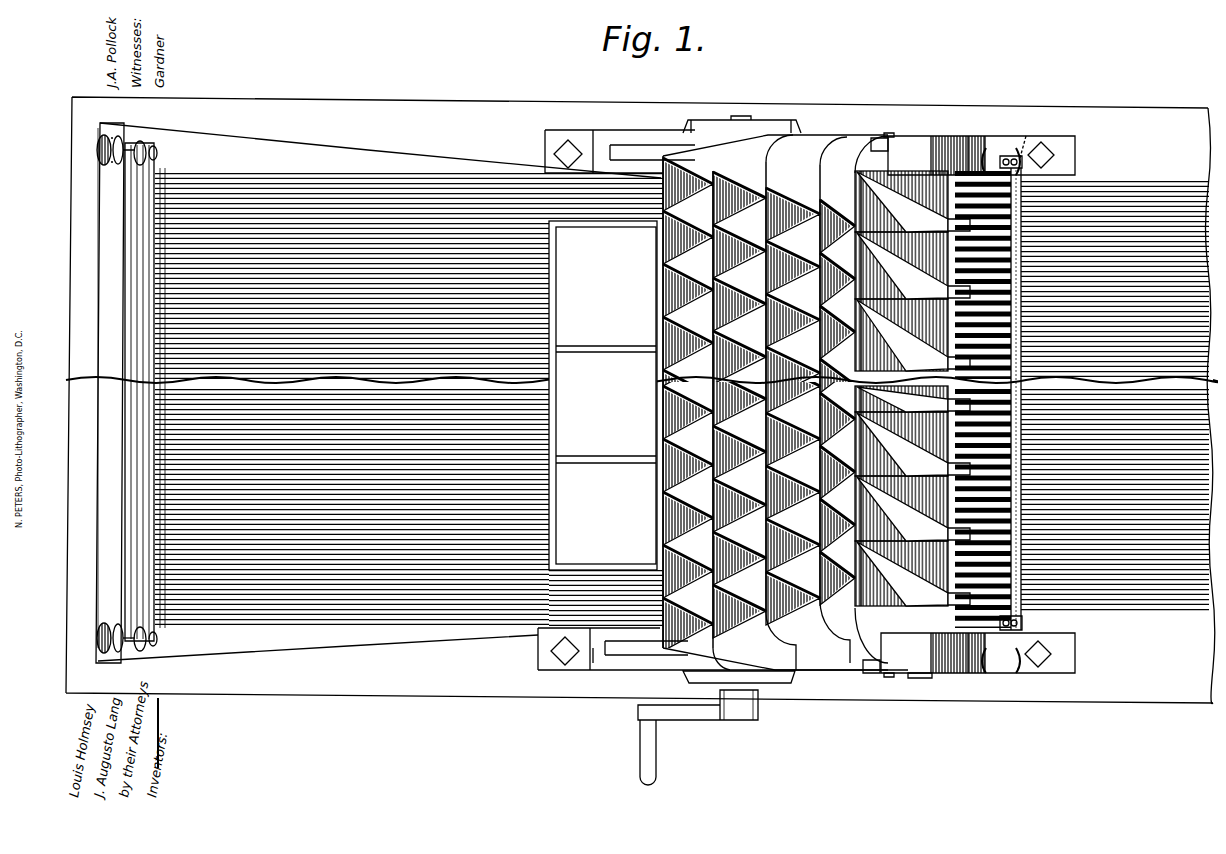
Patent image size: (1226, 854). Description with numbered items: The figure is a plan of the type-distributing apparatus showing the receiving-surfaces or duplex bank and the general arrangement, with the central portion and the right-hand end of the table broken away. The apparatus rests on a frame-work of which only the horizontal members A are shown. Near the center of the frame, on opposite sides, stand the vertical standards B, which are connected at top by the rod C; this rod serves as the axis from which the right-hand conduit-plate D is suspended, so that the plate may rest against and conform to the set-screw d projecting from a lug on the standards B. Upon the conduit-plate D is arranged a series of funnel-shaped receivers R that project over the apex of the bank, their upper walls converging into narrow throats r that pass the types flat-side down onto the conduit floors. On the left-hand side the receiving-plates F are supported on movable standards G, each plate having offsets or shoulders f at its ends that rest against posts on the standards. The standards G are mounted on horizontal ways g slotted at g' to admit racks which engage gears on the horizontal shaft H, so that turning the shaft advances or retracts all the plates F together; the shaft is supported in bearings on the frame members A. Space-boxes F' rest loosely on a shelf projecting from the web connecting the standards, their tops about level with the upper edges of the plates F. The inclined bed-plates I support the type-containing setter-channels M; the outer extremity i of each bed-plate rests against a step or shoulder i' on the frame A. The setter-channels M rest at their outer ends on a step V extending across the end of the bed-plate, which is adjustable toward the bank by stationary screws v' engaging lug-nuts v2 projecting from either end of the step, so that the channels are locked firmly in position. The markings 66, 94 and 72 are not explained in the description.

The horizontal members of the frame-work A is at (642, 400).
The bed-plate I is at (182, 393).
The outer and lower extremity of bed-plate i is at (379, 392).
The step or shoulder i' is at (85, 388).
The step or shoulder V is at (145, 392).
The stationary screws v' is at (116, 385).
The lug-nuts v2 is at (149, 394).
The setter-channels M is at (731, 400).
The space-boxes F' is at (603, 395).
The receiving-plates F is at (775, 399).
The funnel-shaped receivers R is at (901, 388).
The narrow throats r is at (959, 410).
The right-hand conduit-plate D is at (1002, 393).
The bearing 66 is at (1009, 394).
The movable standards G is at (723, 397).
The horizontal ways g is at (594, 657).
The slots g' is at (650, 403).
The horizontal shaft H is at (744, 110).
The vertical standards B is at (978, 404).
The offsets or shoulders f is at (871, 405).
The pin 94 is at (881, 127).
The set-screw or rest d is at (995, 392).
The pin 72 is at (1018, 140).
The rod C is at (912, 670).